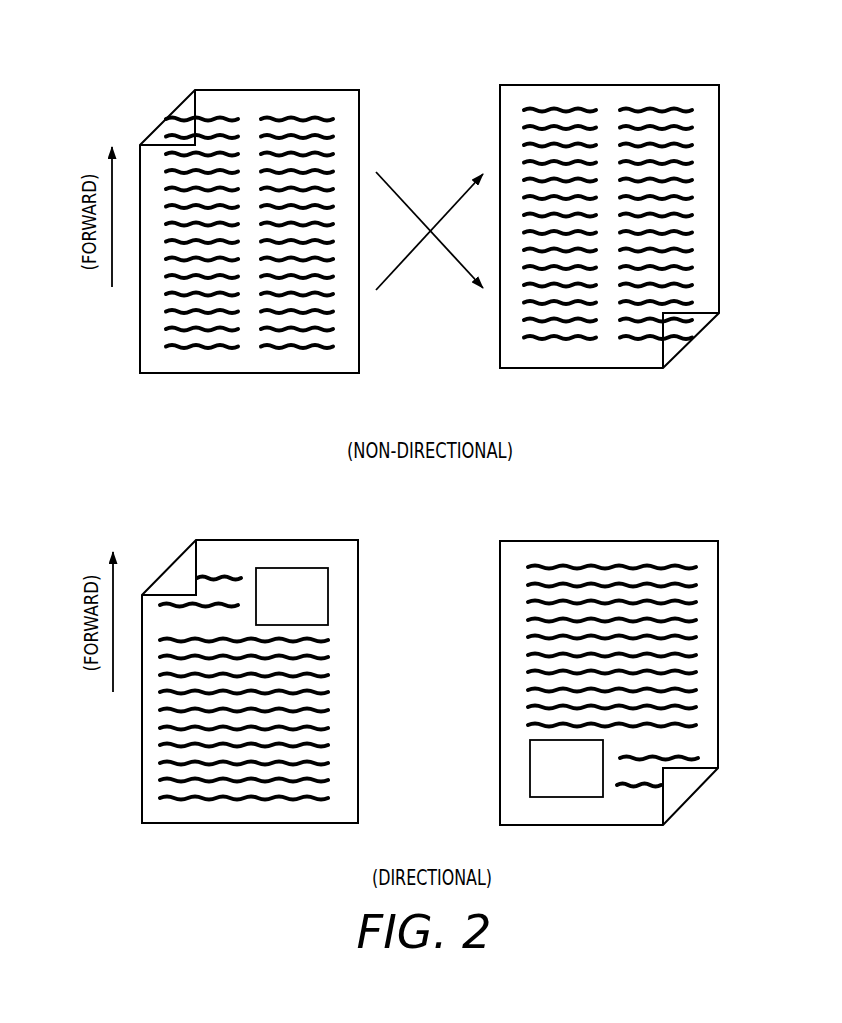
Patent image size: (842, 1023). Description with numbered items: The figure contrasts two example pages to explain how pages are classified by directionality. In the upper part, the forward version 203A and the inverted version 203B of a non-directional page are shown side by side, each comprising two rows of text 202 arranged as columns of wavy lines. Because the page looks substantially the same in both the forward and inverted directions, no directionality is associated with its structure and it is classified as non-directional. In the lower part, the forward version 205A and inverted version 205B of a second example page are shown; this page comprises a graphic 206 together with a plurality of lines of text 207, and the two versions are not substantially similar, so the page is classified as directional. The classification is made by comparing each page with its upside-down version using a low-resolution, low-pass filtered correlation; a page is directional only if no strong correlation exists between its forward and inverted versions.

The rows of text 202 is at (292, 112).
The forward version of the non-directional page 203A is at (330, 90).
The inverted version of the non-directional page 203B is at (670, 85).
The forward version of the directional page 205A is at (208, 537).
The inverted version of the directional page 205B is at (612, 538).
The graphic 206 is at (288, 565).
The lines of text 207 is at (179, 662).